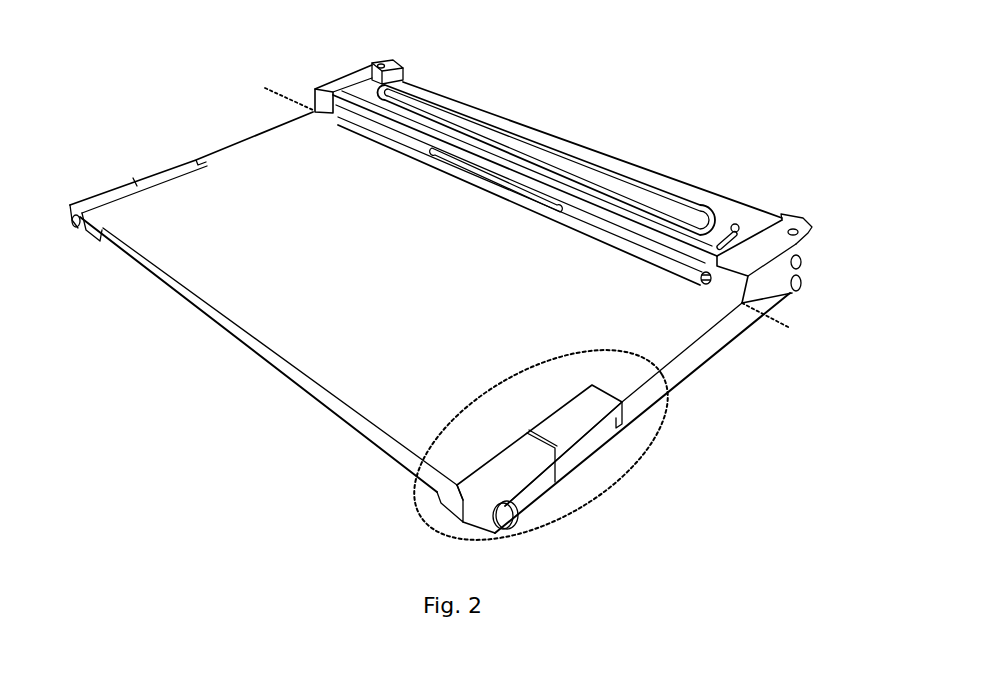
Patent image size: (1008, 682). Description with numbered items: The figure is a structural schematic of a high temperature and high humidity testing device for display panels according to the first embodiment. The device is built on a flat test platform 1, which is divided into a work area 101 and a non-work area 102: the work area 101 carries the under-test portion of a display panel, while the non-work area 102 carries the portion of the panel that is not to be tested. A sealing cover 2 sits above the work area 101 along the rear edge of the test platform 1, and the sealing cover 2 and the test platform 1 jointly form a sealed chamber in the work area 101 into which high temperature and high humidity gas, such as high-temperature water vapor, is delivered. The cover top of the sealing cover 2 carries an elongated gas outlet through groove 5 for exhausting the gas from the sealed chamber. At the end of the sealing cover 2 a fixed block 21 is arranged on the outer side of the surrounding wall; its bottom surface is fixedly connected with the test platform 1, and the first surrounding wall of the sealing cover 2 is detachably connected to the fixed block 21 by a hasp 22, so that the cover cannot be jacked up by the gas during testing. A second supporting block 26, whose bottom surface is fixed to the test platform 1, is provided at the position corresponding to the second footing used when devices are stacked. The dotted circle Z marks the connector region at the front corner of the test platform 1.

The test platform 1 is at (680, 384).
The sealing cover 2 is at (652, 214).
The gas outlet through groove 5 is at (565, 165).
The fixed block 21 is at (763, 277).
The hasp 22 is at (710, 281).
The second supporting block 26 is at (798, 242).
The work area 101 is at (350, 87).
The non-work area 102 is at (308, 182).
The connector region Z is at (630, 477).